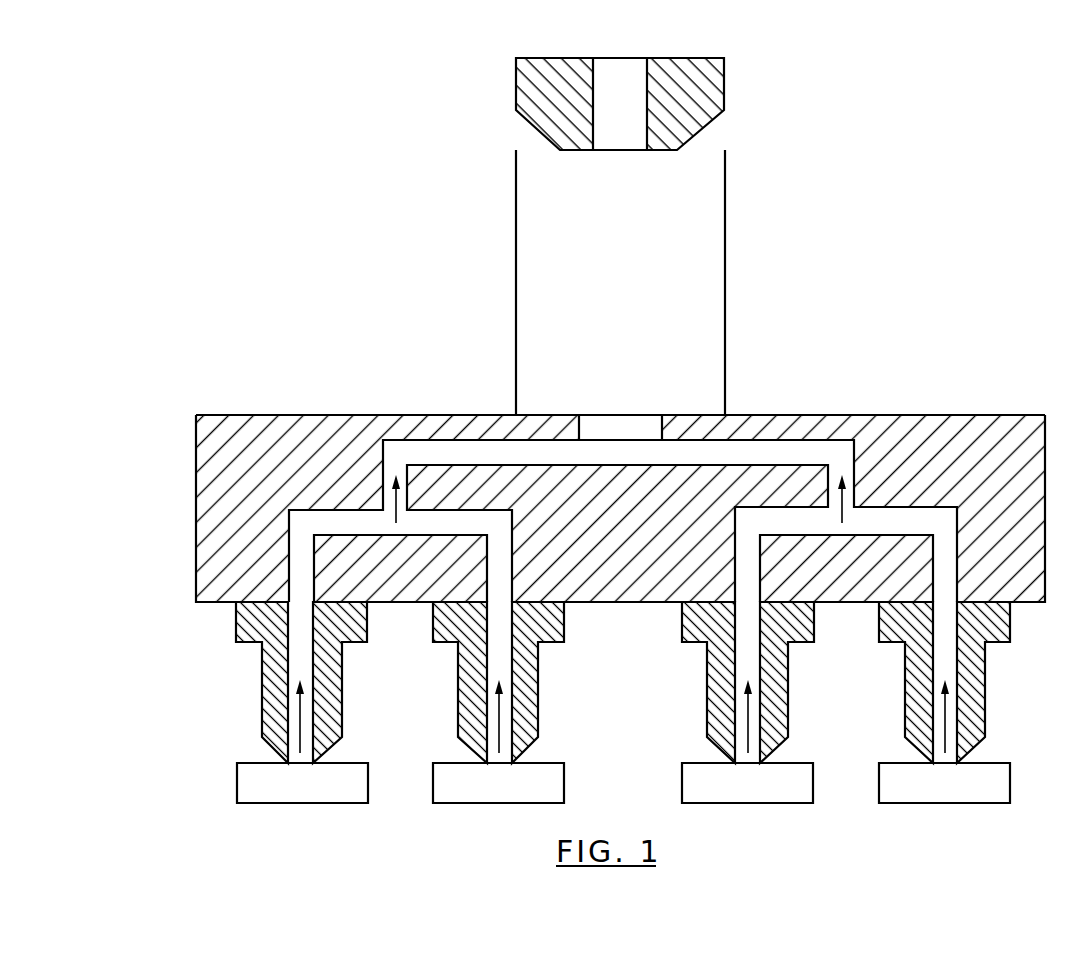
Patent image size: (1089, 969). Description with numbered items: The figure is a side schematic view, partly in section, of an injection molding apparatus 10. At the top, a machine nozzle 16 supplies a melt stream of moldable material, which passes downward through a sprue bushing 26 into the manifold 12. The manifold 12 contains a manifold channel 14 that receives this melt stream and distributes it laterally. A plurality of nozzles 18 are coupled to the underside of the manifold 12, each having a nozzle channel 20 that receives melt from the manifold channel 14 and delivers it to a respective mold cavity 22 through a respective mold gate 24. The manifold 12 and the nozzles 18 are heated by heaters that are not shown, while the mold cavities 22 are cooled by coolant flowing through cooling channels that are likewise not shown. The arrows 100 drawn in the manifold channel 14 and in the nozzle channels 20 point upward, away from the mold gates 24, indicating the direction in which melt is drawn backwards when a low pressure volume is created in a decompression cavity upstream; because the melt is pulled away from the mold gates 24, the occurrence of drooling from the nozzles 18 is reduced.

The injection molding apparatus 10 is at (814, 181).
The manifold 12 is at (1007, 438).
The manifold channel 14 is at (442, 450).
The machine nozzle 16 is at (700, 80).
The nozzle 18 is at (970, 690).
The nozzle channel 20 is at (947, 652).
The mold cavity 22 is at (247, 782).
The mold gate 24 is at (287, 752).
The sprue bushing 26 is at (636, 232).
The arrows 100 is at (843, 495).